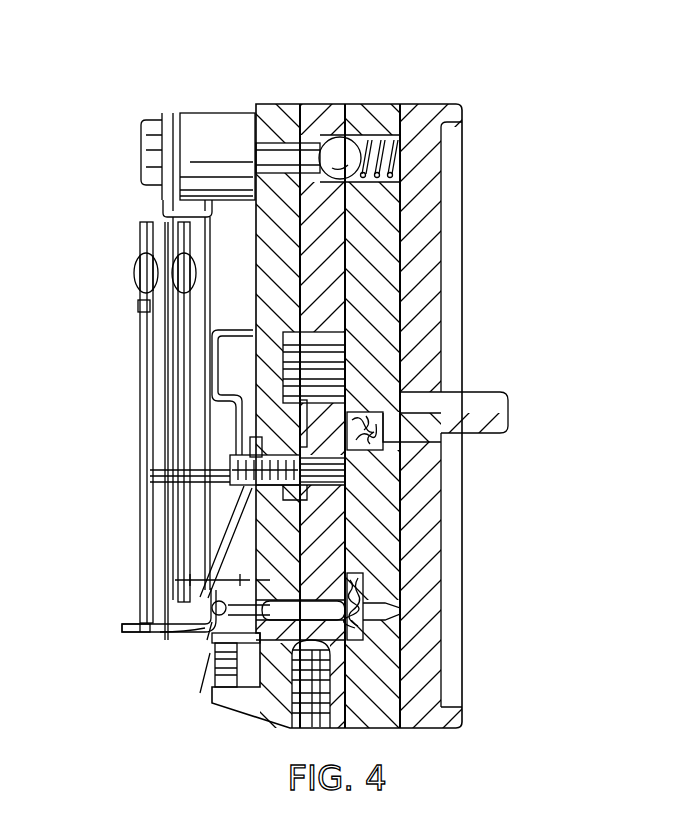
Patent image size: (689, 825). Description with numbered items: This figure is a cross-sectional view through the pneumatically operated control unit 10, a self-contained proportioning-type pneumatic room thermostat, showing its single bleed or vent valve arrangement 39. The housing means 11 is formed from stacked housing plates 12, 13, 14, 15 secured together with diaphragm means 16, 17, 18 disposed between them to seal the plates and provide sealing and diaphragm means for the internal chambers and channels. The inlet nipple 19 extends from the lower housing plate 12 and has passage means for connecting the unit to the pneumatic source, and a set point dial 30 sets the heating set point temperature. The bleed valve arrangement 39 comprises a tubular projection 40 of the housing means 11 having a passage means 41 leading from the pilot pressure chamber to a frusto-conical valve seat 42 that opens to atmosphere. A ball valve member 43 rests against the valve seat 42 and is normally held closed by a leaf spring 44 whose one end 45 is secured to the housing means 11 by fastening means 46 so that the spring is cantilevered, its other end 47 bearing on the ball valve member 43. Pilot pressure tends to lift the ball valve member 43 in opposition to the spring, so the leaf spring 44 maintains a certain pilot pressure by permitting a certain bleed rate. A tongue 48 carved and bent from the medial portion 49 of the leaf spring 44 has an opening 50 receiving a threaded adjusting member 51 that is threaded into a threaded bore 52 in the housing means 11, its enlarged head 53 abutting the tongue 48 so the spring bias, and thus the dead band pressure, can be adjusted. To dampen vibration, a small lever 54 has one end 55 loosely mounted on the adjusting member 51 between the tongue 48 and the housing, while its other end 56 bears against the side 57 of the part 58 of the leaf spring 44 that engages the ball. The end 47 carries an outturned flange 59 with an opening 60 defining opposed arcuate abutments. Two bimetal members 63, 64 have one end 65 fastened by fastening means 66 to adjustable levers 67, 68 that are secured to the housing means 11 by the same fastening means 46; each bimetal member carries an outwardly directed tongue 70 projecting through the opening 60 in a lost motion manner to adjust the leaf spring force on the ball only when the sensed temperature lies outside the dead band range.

The control unit 10 is at (530, 116).
The housing means 11 is at (445, 272).
The housing plate 12 is at (428, 104).
The housing plate 13 is at (363, 104).
The housing plate 14 is at (317, 104).
The housing plate 15 is at (270, 104).
The diaphragm means 16 is at (400, 104).
The diaphragm means 17 is at (347, 104).
The diaphragm means 18 is at (283, 104).
The inlet nipple 19 is at (490, 398).
The set point dial 30 is at (228, 680).
The bleed valve arrangement 39 is at (203, 660).
The tubular projection 40 is at (247, 492).
The passage means 41 is at (312, 600).
The valve seat 42 is at (207, 643).
The ball valve member 43 is at (245, 585).
The leaf spring 44 is at (210, 297).
The end of leaf spring 45 is at (193, 200).
The fastening means 46 is at (147, 133).
The other end of leaf spring 47 is at (212, 622).
The tongue 48 is at (237, 425).
The medial portion 49 is at (205, 380).
The opening 50 is at (230, 463).
The adjusting member 51 is at (326, 482).
The threaded bore 52 is at (305, 447).
The enlarged head 53 is at (222, 483).
The lever 54 is at (247, 517).
The end of lever 55 is at (247, 442).
The other end of lever 56 is at (197, 598).
The side 57 is at (197, 620).
The part of leaf spring 58 is at (200, 577).
The outturned flange 59 is at (122, 628).
The opening 60 is at (160, 633).
The bimetal member 63 is at (142, 350).
The bimetal member 64 is at (183, 330).
The end of bimetal member 65 is at (157, 243).
The fastening means 66 is at (130, 277).
The adjustable lever 67 is at (138, 302).
The adjustable lever 68 is at (291, 238).
The tongue 70 is at (160, 630).